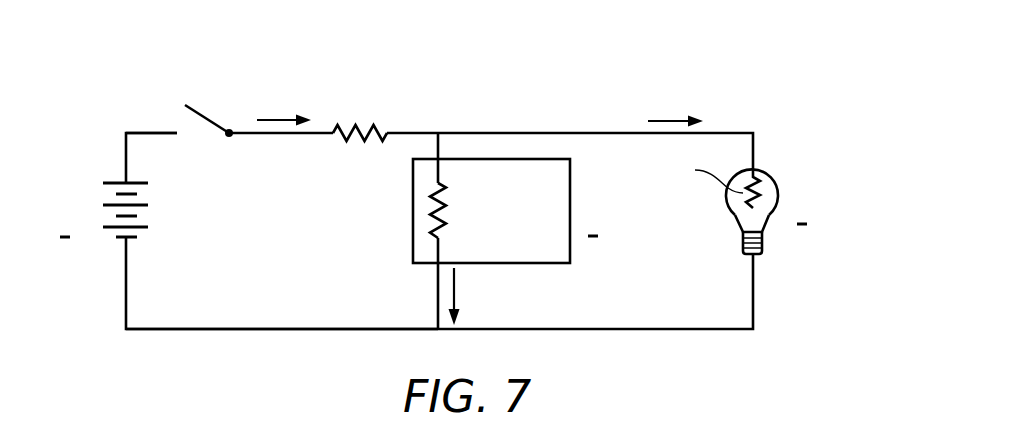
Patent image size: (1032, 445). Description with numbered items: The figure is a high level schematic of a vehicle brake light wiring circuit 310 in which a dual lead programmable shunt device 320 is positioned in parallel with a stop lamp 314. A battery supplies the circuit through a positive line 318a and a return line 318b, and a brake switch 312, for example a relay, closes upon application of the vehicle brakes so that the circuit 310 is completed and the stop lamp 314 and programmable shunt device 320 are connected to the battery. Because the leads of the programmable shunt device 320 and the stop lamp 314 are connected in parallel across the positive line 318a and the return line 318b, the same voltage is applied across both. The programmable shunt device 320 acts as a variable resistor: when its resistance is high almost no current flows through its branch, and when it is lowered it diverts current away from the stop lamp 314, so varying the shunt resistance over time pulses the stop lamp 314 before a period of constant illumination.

The brake light wiring circuit 310 is at (783, 123).
The brake switch 312 is at (203, 112).
The stop lamp 314 is at (765, 225).
The positive line 318a is at (146, 132).
The return line 318b is at (185, 330).
The programmable shunt device 320 is at (530, 158).